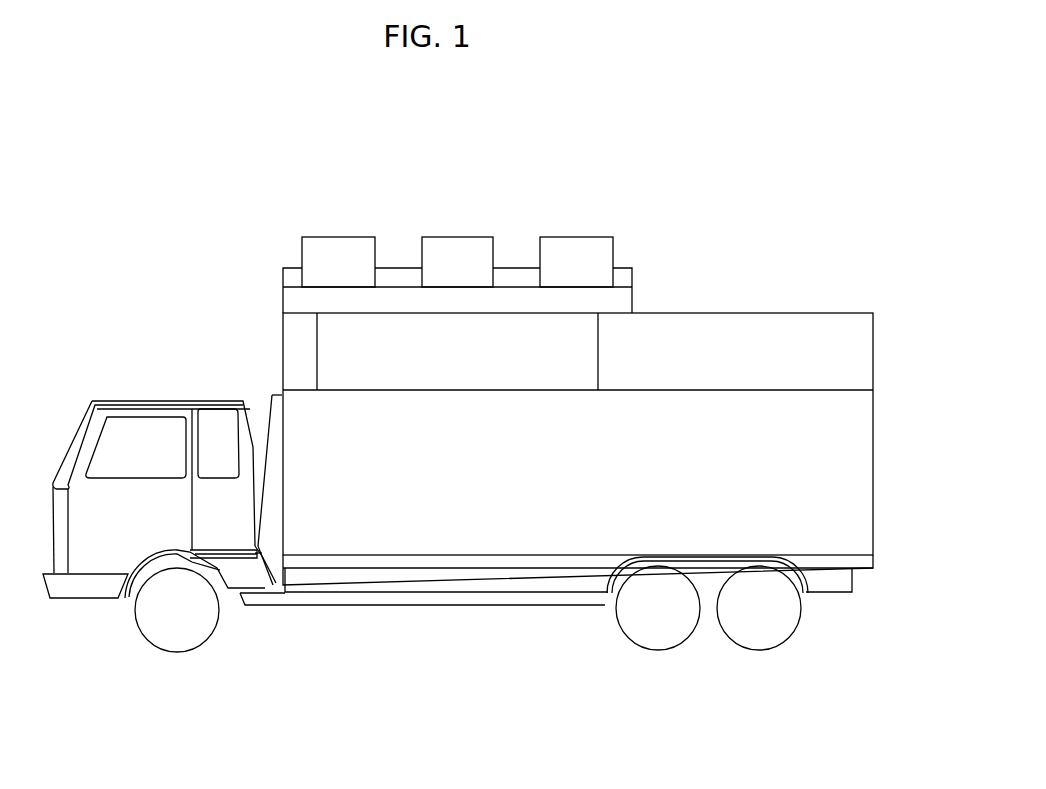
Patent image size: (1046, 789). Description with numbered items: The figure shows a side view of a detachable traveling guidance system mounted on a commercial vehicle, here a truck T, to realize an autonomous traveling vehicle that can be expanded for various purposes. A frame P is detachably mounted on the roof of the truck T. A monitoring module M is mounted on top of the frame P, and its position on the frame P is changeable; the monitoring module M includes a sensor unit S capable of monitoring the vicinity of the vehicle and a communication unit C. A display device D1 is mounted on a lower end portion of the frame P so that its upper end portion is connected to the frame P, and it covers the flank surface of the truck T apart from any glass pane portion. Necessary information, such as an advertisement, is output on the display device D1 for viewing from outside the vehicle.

The truck T is at (92, 587).
The display device D1 is at (858, 472).
The frame P is at (622, 297).
The monitoring module M is at (457, 197).
The communication unit C is at (455, 247).
The sensor unit S is at (576, 221).